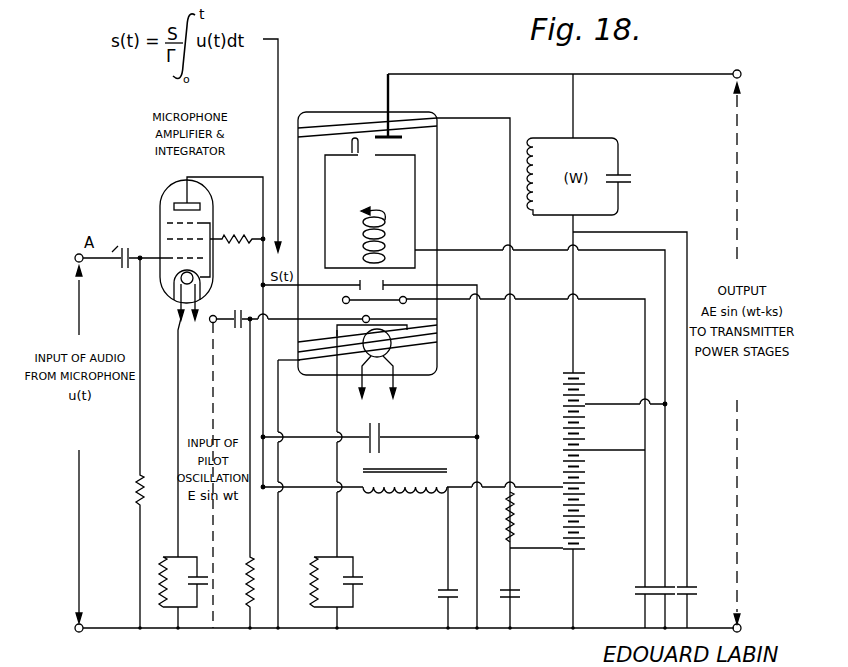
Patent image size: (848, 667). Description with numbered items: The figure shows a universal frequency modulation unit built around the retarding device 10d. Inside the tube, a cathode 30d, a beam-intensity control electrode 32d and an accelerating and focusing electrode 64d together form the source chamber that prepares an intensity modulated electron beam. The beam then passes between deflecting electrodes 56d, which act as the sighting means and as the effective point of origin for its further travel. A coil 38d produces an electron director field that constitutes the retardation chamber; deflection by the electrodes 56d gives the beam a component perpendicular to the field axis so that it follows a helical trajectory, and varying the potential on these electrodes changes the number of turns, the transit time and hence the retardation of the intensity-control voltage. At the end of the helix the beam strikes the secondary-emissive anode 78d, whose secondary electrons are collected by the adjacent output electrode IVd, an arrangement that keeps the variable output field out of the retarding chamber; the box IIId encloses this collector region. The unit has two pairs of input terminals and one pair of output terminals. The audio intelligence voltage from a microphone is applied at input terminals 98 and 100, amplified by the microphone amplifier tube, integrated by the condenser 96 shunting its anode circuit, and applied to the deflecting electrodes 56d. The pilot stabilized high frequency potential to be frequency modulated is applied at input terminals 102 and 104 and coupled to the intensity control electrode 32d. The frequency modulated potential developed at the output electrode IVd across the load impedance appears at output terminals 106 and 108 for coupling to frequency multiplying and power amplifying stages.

The input terminal 100 is at (76, 254).
The input terminal 98 is at (78, 632).
The input terminal 102 is at (215, 316).
The input terminal 104 is at (213, 631).
The retarding device 10d is at (305, 112).
The secondary-emissive anode 78d is at (351, 139).
The output electrode IVd is at (380, 133).
The electrode box with coil IIId is at (416, 184).
The deflecting electrodes 56d is at (386, 281).
The accelerating and focusing electrode 64d is at (343, 302).
The beam-intensity control electrode 32d is at (412, 318).
The cathode 30d is at (337, 326).
The coil 38d is at (313, 352).
The condenser 96 is at (381, 432).
The output terminal 106 is at (740, 70).
The output terminal 108 is at (742, 623).